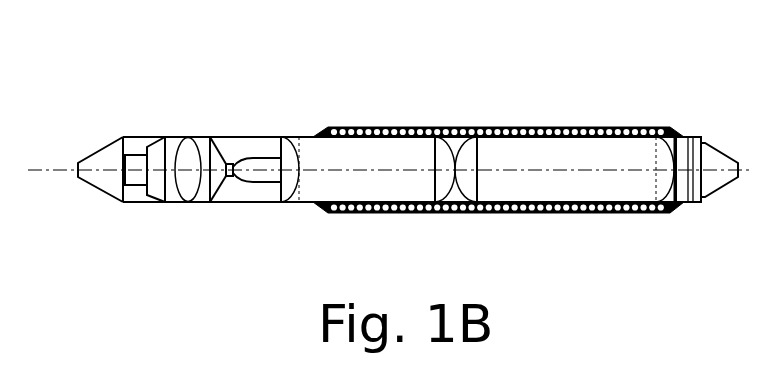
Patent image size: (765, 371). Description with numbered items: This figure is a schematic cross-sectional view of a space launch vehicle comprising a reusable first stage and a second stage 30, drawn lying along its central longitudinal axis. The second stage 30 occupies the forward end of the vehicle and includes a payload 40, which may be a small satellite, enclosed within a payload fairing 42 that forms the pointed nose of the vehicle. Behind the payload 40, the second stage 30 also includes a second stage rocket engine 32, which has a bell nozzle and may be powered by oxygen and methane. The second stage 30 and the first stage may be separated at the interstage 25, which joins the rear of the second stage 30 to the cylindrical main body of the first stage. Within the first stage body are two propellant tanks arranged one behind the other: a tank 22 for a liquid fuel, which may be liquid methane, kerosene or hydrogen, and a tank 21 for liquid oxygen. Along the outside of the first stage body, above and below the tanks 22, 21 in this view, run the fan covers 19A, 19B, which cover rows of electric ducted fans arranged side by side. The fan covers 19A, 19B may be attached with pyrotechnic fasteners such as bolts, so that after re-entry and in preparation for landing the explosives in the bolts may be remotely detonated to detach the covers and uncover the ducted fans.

The second stage 30 is at (163, 169).
The payload fairing 42 is at (100, 193).
The payload 40 is at (138, 172).
The second stage rocket engine 32 is at (250, 172).
The interstage 25 is at (287, 215).
The tank for a liquid fuel 22 is at (363, 153).
The tank for liquid oxygen 21 is at (603, 160).
The fan cover 19A is at (457, 127).
The fan cover 19B is at (567, 215).